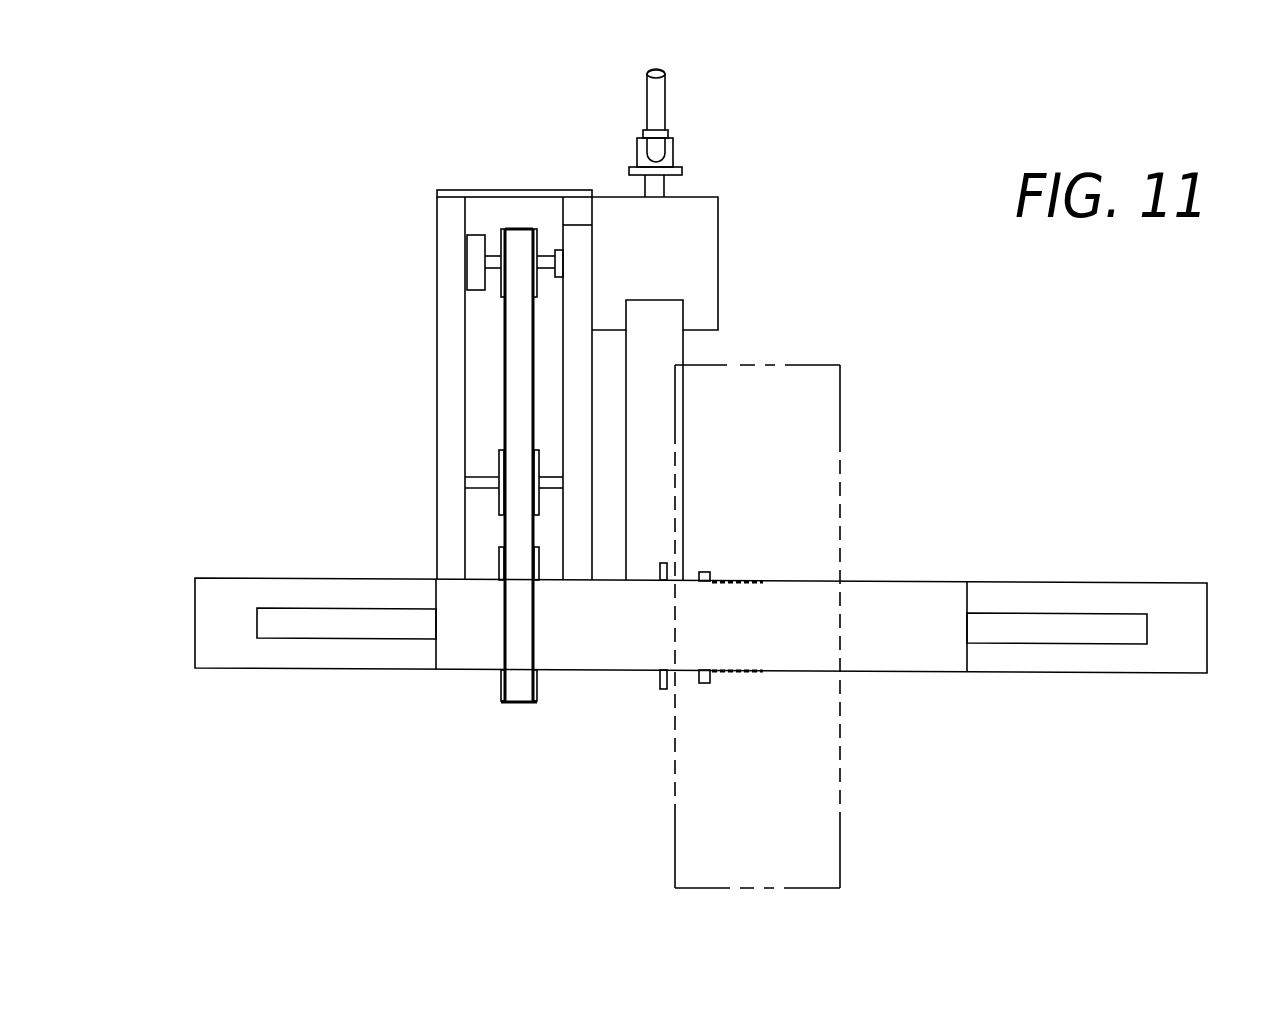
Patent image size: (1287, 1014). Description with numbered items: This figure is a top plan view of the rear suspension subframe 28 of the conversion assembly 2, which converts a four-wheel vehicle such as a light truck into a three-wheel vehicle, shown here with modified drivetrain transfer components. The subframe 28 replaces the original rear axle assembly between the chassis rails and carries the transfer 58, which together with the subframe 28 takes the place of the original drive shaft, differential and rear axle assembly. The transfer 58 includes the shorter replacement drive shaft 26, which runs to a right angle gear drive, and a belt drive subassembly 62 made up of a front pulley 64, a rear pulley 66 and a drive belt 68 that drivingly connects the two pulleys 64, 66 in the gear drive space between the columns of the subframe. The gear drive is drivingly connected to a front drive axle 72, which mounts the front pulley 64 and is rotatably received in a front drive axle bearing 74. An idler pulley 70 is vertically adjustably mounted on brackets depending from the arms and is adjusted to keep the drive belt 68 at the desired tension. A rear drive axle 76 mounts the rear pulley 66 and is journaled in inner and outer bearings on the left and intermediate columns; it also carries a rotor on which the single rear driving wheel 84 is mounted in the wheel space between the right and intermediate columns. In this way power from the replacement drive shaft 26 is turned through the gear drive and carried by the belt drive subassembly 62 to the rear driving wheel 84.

The conversion assembly 2 is at (349, 163).
The replacement drive shaft 26 is at (665, 92).
The rear suspension subframe 28 is at (345, 418).
The transfer 58 is at (345, 308).
The belt drive subassembly 62 is at (539, 229).
The front pulley 64 is at (502, 229).
The rear pulley 66 is at (503, 705).
The drive belt 68 is at (518, 705).
The idler pulley 70 is at (503, 516).
The front drive axle 72 is at (548, 253).
The front drive axle bearing 74 is at (473, 236).
The rear drive axle 76 is at (482, 476).
The rear driving wheel 84 is at (840, 365).